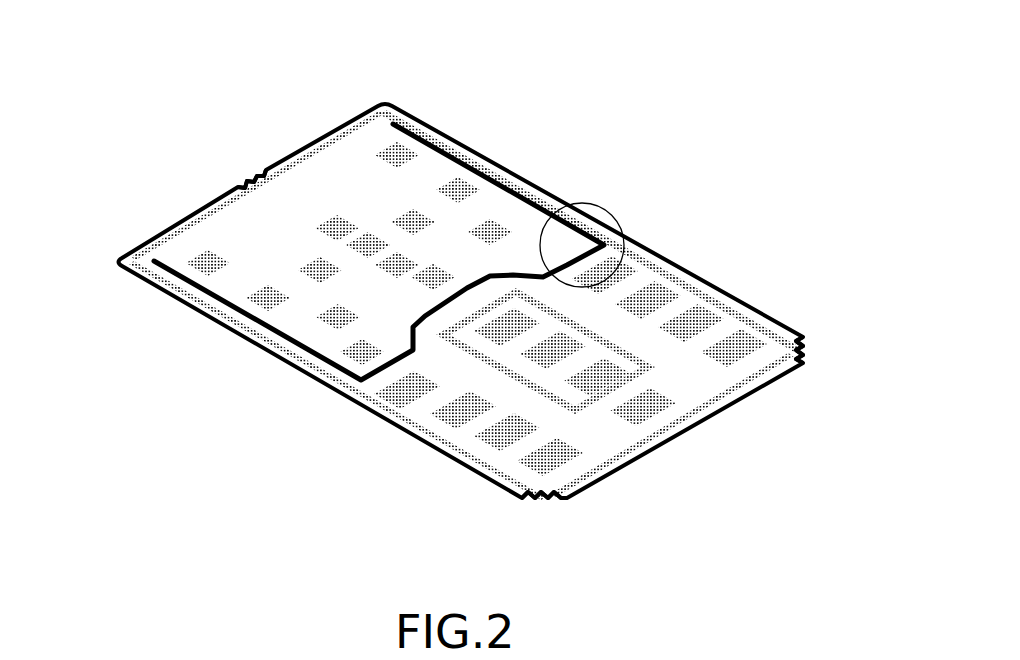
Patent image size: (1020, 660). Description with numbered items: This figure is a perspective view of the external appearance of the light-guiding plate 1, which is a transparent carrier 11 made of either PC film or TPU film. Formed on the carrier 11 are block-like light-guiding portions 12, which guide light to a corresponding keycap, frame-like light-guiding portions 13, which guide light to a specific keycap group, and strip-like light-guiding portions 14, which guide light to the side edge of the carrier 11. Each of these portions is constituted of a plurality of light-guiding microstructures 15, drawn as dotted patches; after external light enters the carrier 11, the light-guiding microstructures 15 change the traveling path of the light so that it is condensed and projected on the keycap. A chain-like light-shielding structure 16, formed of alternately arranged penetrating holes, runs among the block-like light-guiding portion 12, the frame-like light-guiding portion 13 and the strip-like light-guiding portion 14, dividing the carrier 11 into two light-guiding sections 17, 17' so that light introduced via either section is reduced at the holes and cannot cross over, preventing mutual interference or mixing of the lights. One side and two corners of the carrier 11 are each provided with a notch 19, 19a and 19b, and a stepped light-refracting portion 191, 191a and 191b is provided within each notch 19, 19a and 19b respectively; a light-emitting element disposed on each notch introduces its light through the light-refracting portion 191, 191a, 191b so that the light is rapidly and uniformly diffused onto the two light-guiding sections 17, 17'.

The light-guiding plate 1 is at (327, 132).
The carrier 11 is at (170, 243).
The block-like light-guiding portion 12 is at (660, 290).
The frame-like light-guiding portion 13 is at (657, 368).
The strip-like light-guiding portion 14 is at (615, 268).
The light-guiding microstructures 15 is at (697, 323).
The light-shielding structure 16 is at (521, 200).
The light-guiding section 17 is at (320, 253).
The light-guiding section 17' is at (570, 421).
The notch 19 is at (237, 176).
The light-refracting portion 191 is at (247, 183).
The notch 19a is at (810, 358).
The light-refracting portion 191a is at (808, 347).
The notch 19b is at (567, 507).
The light-refracting portion 191b is at (545, 500).